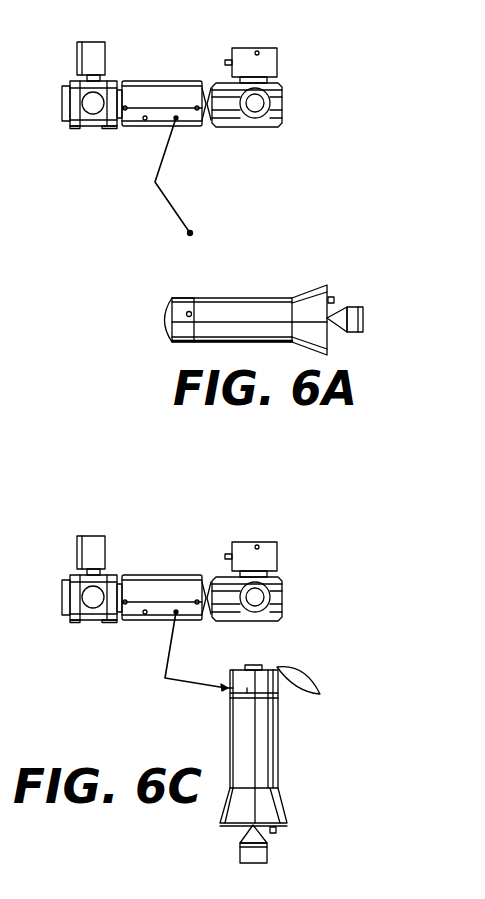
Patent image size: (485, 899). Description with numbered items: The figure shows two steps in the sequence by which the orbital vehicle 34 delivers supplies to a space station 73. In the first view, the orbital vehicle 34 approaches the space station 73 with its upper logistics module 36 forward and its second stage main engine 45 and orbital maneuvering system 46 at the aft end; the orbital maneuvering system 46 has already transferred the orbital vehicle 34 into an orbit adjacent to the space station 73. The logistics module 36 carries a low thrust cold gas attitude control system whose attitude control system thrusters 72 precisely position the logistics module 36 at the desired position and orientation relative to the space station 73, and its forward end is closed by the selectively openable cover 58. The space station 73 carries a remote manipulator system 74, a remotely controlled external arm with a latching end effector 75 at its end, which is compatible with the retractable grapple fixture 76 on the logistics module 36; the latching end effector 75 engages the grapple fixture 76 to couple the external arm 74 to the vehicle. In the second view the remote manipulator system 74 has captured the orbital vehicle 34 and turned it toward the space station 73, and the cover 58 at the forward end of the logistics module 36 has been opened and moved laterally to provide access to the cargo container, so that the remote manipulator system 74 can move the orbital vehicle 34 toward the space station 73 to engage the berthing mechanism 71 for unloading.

In FIG. 6A, the orbital vehicle 34 is at (264, 298).
In FIG. 6C, the orbital vehicle 34 is at (277, 748).
In FIG. 6A, the logistics module 36 is at (179, 298).
In FIG. 6C, the logistics module 36 is at (247, 688).
In FIG. 6A, the second stage main engine 45 is at (360, 315).
In FIG. 6C, the second stage main engine 45 is at (247, 852).
In FIG. 6A, the orbital maneuvering system 46 is at (334, 302).
In FIG. 6C, the orbital maneuvering system 46 is at (274, 834).
In FIG. 6A, the selectively openable cover 58 is at (163, 325).
In FIG. 6C, the selectively openable cover 58 is at (308, 672).
In FIG. 6A, the berthing mechanism 71 is at (255, 119).
In FIG. 6C, the berthing mechanism 71 is at (254, 613).
In FIG. 6A, the attitude control system thrusters 72 is at (186, 303).
In FIG. 6A, the space station 73 is at (170, 92).
In FIG. 6C, the space station 73 is at (170, 586).
In FIG. 6A, the remote manipulator system 74 is at (163, 150).
In FIG. 6C, the remote manipulator system 74 is at (168, 645).
In FIG. 6A, the latching end effector 75 is at (192, 232).
In FIG. 6C, the latching end effector 75 is at (228, 689).
In FIG. 6A, the retractable grapple fixture 76 is at (187, 312).
In FIG. 6C, the retractable grapple fixture 76 is at (230, 697).